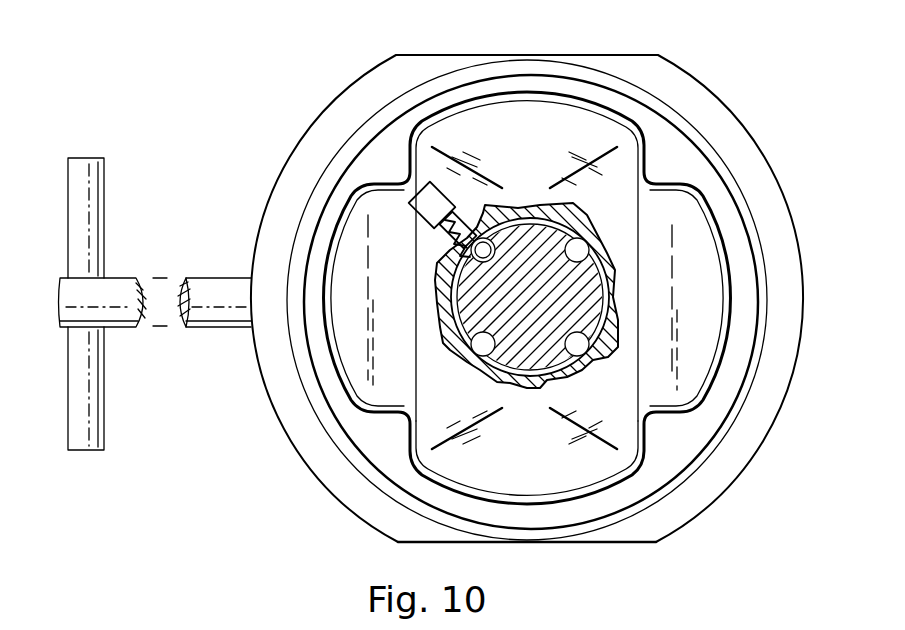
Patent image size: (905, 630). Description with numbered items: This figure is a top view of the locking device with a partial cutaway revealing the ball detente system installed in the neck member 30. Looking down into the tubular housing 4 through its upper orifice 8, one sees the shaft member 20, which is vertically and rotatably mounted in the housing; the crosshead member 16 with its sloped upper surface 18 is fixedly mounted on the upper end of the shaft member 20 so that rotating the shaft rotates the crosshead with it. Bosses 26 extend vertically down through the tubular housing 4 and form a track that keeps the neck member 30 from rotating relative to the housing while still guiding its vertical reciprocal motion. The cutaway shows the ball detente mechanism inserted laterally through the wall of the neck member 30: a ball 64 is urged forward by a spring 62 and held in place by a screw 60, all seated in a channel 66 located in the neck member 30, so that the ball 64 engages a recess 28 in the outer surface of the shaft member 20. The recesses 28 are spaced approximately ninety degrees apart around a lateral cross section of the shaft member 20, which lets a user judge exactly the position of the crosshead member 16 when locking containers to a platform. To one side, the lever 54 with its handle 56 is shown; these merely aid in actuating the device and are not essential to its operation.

The tubular housing 4 is at (760, 147).
The upper orifice 8 is at (749, 148).
The crosshead member 16 is at (640, 477).
The sloped upper surface 18 is at (515, 118).
The shaft member 20 is at (470, 315).
The boss 26 is at (653, 150).
The recess 28 is at (593, 237).
The neck member 30 is at (700, 245).
The lever 54 is at (75, 300).
The handle 56 is at (75, 190).
The screw 60 is at (420, 183).
The spring 62 is at (425, 235).
The ball 64 is at (466, 250).
The channel 66 is at (480, 197).